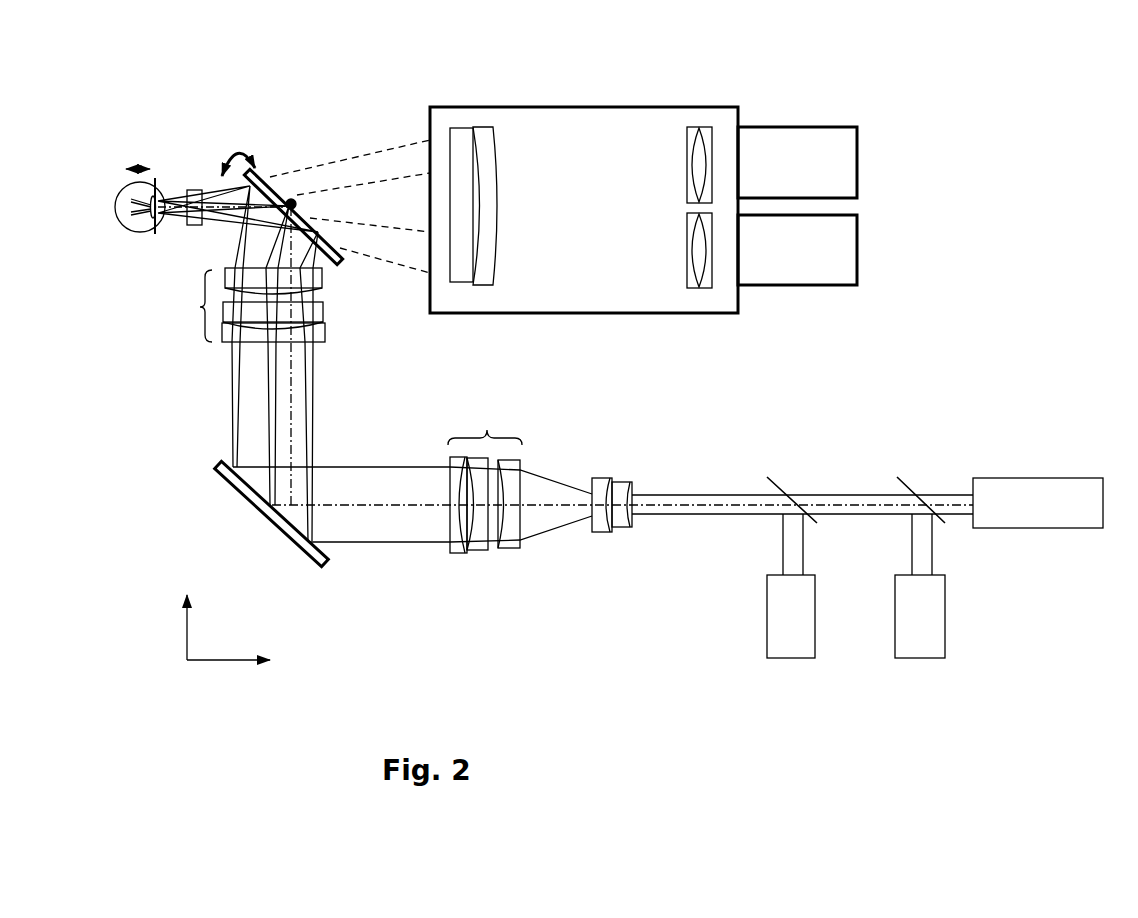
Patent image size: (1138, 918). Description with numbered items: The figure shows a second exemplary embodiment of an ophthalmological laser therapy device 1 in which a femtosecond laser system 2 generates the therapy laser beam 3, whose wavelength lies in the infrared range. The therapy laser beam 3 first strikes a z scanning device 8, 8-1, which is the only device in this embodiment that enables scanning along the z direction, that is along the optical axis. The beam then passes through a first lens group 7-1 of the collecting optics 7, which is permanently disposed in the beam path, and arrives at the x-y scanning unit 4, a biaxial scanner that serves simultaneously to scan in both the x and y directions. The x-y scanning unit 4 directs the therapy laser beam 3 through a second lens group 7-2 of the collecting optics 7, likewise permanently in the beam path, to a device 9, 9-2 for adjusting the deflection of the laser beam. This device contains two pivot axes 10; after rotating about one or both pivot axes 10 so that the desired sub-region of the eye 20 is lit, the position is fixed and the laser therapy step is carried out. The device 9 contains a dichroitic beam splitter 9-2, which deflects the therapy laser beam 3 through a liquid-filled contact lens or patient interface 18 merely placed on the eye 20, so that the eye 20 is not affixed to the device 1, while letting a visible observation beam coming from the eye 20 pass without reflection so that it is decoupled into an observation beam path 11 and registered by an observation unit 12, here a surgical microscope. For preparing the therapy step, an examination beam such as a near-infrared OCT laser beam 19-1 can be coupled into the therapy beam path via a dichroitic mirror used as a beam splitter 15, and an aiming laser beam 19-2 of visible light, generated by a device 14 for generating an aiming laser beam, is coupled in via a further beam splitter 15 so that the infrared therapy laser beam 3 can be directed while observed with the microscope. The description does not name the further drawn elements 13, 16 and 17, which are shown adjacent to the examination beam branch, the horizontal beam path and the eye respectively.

The ophthalmological laser therapy device 1 is at (1029, 347).
The femtosecond laser system 2 is at (1027, 471).
The therapy laser beam 3 is at (165, 192).
The x-y scanning unit 4 is at (260, 535).
The collecting optics 7 is at (320, 410).
The first lens group 7-1 is at (486, 470).
The second lens group 7-2 is at (220, 305).
The z scanning device 8 is at (629, 464).
The z scanning device 8-1 is at (609, 476).
The device for adjusting the deflection of the laser beam 9 is at (315, 150).
The dichroitic beam splitter 9-2 is at (314, 214).
The pivot axes 10 is at (291, 196).
The observation beam path 11 is at (382, 160).
The observation unit 12 is at (600, 100).
The detector 13 is at (783, 661).
The device for generating an aiming laser beam 14 is at (910, 661).
The beam splitter 15 is at (888, 473).
The optical axis 16 is at (391, 510).
The eye movement direction 17 is at (141, 147).
The patient interface 18 is at (191, 188).
The OCT laser beam 19-1 is at (780, 530).
The aiming laser beam 19-2 is at (938, 536).
The eye 20 is at (110, 196).